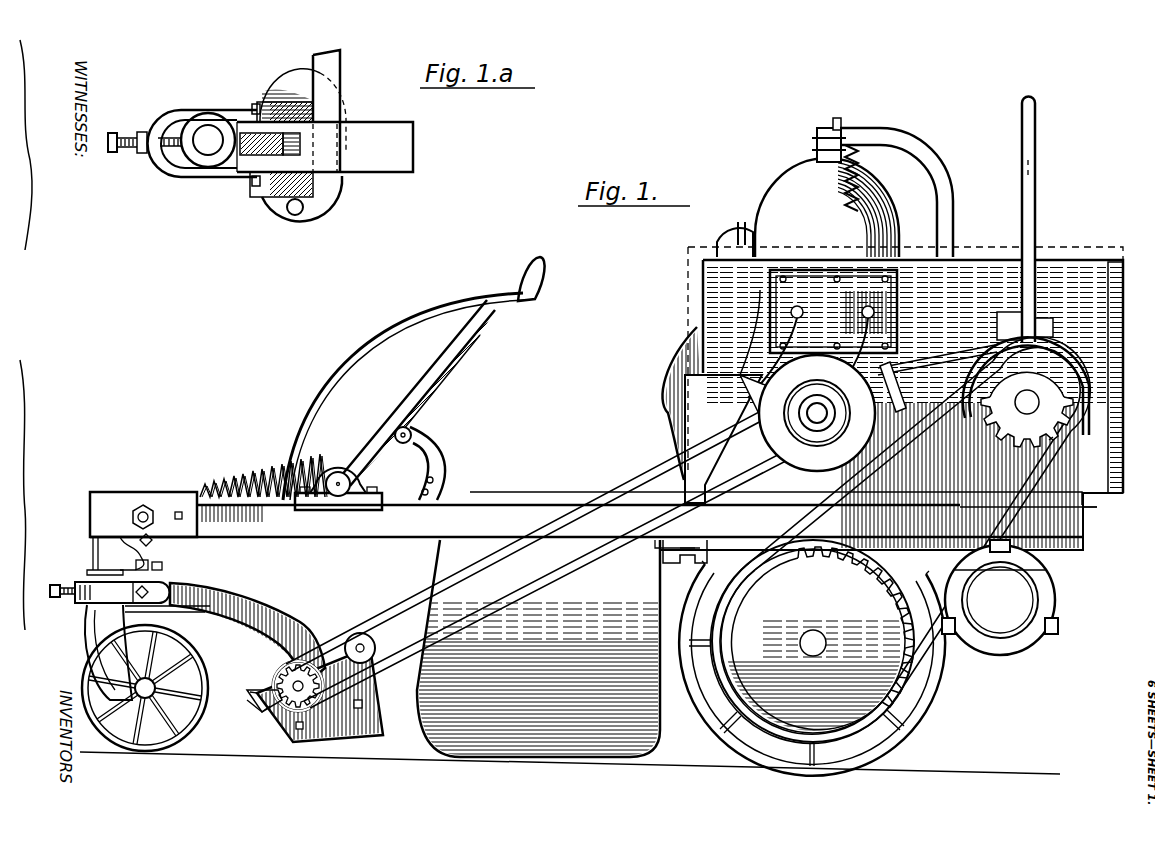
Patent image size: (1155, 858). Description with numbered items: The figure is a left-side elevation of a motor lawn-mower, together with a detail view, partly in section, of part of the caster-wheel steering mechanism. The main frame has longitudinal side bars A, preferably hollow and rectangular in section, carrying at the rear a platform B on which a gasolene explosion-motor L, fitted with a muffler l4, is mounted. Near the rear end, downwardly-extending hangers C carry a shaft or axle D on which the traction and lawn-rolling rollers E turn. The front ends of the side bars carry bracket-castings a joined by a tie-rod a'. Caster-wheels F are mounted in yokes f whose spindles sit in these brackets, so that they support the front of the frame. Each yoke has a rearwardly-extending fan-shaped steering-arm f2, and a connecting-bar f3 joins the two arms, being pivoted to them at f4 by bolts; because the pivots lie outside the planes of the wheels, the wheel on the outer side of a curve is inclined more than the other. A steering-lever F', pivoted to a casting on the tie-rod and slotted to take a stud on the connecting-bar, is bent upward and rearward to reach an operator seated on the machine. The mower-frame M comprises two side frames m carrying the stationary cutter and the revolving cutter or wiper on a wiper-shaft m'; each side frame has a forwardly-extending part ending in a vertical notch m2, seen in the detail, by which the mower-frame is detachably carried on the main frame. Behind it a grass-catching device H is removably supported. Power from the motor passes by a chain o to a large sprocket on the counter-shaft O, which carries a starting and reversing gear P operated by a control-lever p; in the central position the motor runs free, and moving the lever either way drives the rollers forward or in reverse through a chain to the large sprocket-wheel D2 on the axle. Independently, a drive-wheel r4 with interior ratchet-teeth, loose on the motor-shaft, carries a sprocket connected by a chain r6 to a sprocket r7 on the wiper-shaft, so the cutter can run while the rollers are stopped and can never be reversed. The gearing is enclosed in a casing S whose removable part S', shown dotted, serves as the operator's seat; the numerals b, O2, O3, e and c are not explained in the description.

In FIG. 1, the bracket-casting a is at (121, 533).
In FIG. 1, the tie-rod a' is at (157, 487).
In FIG. 1, the side bar A is at (508, 510).
In FIG. 1, the caster-wheel F is at (128, 678).
In FIG. 1, the steering-lever F' is at (372, 383).
In FIG. 1, the yoke f is at (95, 628).
In FIG. 1A, the steering-arm f2 is at (277, 197).
In FIG. 1A, the connecting-bar f3 is at (340, 58).
In FIG. 1A, the pivot f4 is at (300, 214).
In FIG. 1A, the side frame m is at (349, 147).
In FIG. 1, the side frame m is at (247, 627).
In FIG. 1, the wiper-shaft m' is at (253, 718).
In FIG. 1A, the vertical notch m2 is at (300, 140).
In FIG. 1, the mower-frame M is at (328, 620).
In FIG. 1, the sprocket r7 is at (300, 688).
In FIG. 1, the chain r6 is at (642, 480).
In FIG. 1, the drive-wheel r4 is at (817, 413).
In FIG. 1, the shaft b is at (810, 412).
In FIG. 1, the grass-catching device H is at (650, 573).
In FIG. 1, the box or casing S is at (692, 415).
In FIG. 1, the removable part S' is at (875, 398).
In FIG. 1, the gasolene explosion-motor L is at (835, 187).
In FIG. 1, the chain o is at (859, 345).
In FIG. 1, the control-lever p is at (1035, 206).
In FIG. 1, the starting and reversing gear P is at (1053, 326).
In FIG. 1, the counter-shaft O is at (1040, 401).
In FIG. 1, the gear shaft O2 is at (1013, 403).
In FIG. 1, the gear teeth O3 is at (1053, 440).
In FIG. 1, the platform B is at (1097, 517).
In FIG. 1, the hanger C is at (900, 540).
In FIG. 1, the shaft or axle D is at (814, 640).
In FIG. 1, the large sprocket-wheel D2 is at (813, 641).
In FIG. 1, the traction and lawn-rolling roller E is at (905, 720).
In FIG. 1, the bracket e is at (700, 705).
In FIG. 1, the casing rim c is at (930, 707).
In FIG. 1, the muffler l4 is at (1058, 594).